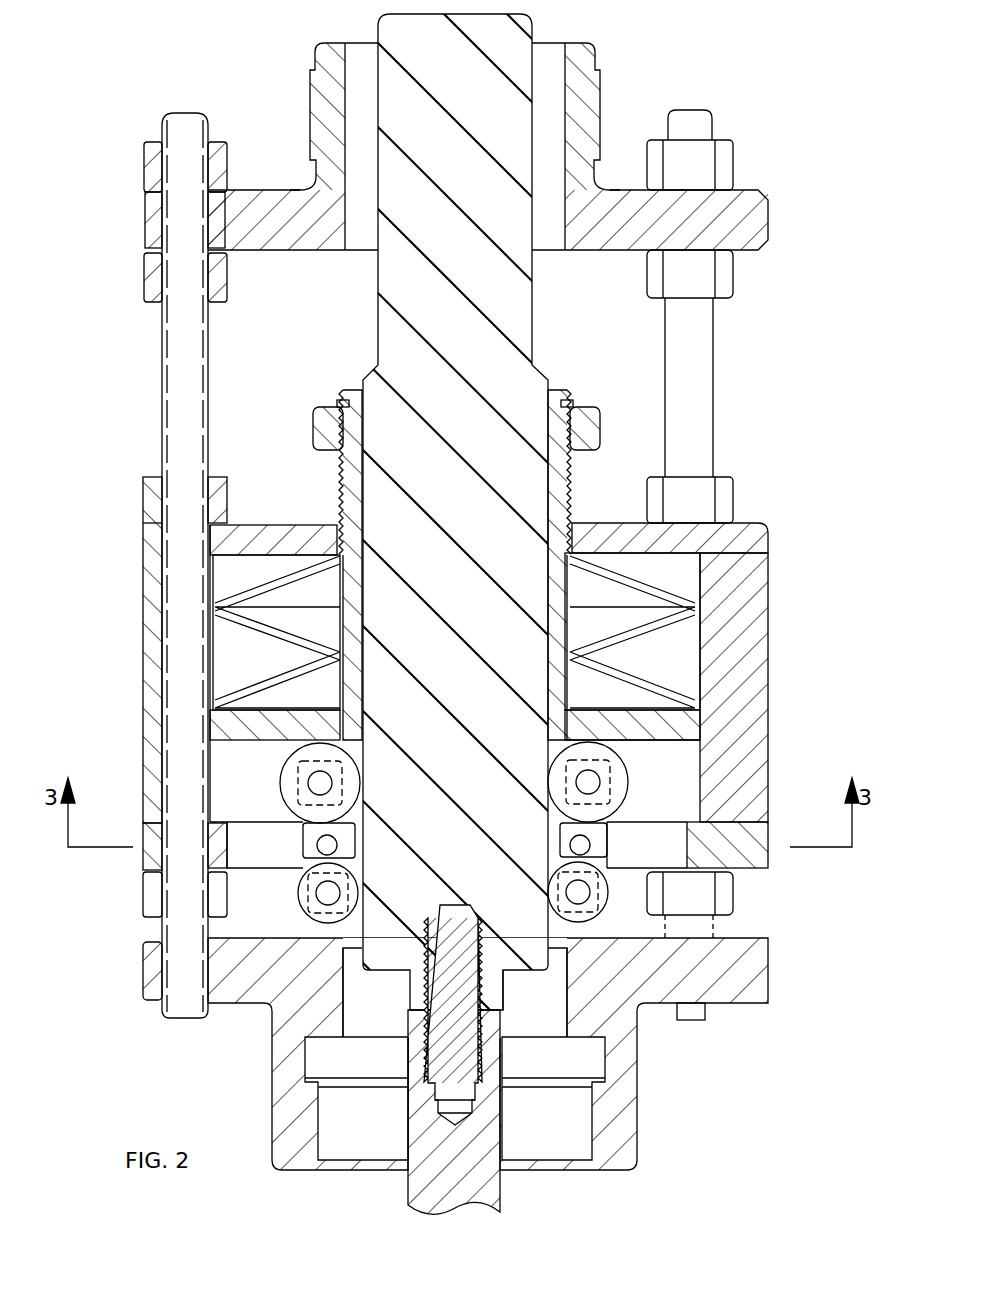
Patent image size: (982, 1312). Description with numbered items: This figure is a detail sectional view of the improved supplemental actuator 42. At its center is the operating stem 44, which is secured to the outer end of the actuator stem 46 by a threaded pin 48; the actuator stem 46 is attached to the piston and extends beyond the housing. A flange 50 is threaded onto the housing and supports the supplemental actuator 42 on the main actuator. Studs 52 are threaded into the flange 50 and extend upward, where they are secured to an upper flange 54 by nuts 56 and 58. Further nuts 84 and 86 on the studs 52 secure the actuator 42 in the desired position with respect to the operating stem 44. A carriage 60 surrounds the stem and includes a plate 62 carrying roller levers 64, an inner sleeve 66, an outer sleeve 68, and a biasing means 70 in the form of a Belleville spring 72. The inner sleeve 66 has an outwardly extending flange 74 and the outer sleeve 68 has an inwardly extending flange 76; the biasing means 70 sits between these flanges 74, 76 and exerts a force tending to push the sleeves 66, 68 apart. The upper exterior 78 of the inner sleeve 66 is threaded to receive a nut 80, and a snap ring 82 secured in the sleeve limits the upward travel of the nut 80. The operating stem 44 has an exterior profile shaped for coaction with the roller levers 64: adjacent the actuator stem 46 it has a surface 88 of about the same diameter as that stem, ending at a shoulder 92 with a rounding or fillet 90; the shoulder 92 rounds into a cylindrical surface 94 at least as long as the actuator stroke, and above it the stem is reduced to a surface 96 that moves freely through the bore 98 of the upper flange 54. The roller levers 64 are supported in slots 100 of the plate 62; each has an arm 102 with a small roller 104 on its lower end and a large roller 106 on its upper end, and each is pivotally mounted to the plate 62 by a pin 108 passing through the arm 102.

The supplemental actuator 42 is at (735, 523).
The operating stem 44 is at (530, 330).
The actuator stem 46 is at (500, 1188).
The threaded pin 48 is at (410, 1093).
The flange 50 is at (640, 1098).
The studs 52 is at (162, 378).
The upper flange 54 is at (832, 205).
The nut 56 is at (144, 168).
The nut 58 is at (145, 270).
The carriage 60 is at (770, 638).
The plate 62 is at (770, 868).
The roller levers 64 is at (304, 848).
The inner sleeve 66 is at (337, 652).
The outer sleeve 68 is at (770, 722).
The biasing means 70 is at (683, 578).
The Belleville spring 72 is at (683, 690).
The outwardly extending flange 74 is at (705, 742).
The inwardly extending flange 76 is at (575, 523).
The upper exterior 78 is at (343, 475).
The nut 80 is at (322, 407).
The snap ring 82 is at (343, 400).
The nut 84 is at (143, 903).
The nut 86 is at (143, 508).
The surface 88 is at (507, 1008).
The fillet 90 is at (513, 973).
The shoulder 92 is at (388, 973).
The cylindrical surface 94 is at (347, 957).
The surface 96 is at (378, 272).
The bore 98 is at (562, 72).
The slots 100 is at (745, 823).
The arm 102 is at (303, 858).
The small roller 104 is at (299, 905).
The large roller 106 is at (290, 768).
The pin 108 is at (304, 852).